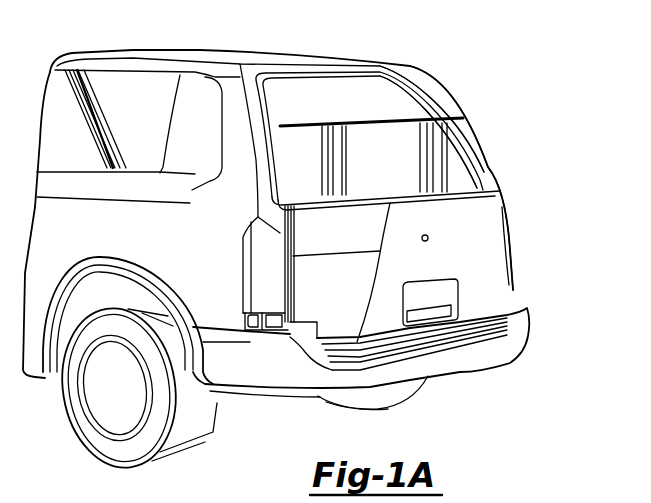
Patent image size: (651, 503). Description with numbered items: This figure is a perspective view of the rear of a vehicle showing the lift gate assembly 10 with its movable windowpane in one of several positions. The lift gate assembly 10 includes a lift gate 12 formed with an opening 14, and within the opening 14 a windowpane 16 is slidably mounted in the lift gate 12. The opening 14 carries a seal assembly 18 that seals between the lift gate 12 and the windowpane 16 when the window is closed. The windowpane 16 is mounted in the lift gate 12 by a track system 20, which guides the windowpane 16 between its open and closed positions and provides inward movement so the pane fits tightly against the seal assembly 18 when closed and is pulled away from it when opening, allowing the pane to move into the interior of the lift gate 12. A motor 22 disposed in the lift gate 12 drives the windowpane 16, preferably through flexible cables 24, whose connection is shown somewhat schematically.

The lift gate assembly 10 is at (253, 57).
The lift gate 12 is at (514, 195).
The opening 14 is at (344, 105).
The windowpane 16 is at (472, 167).
The seal assembly 18 is at (480, 133).
The track system 20 is at (437, 94).
The motor 22 is at (312, 333).
The flexible cables 24 is at (288, 313).